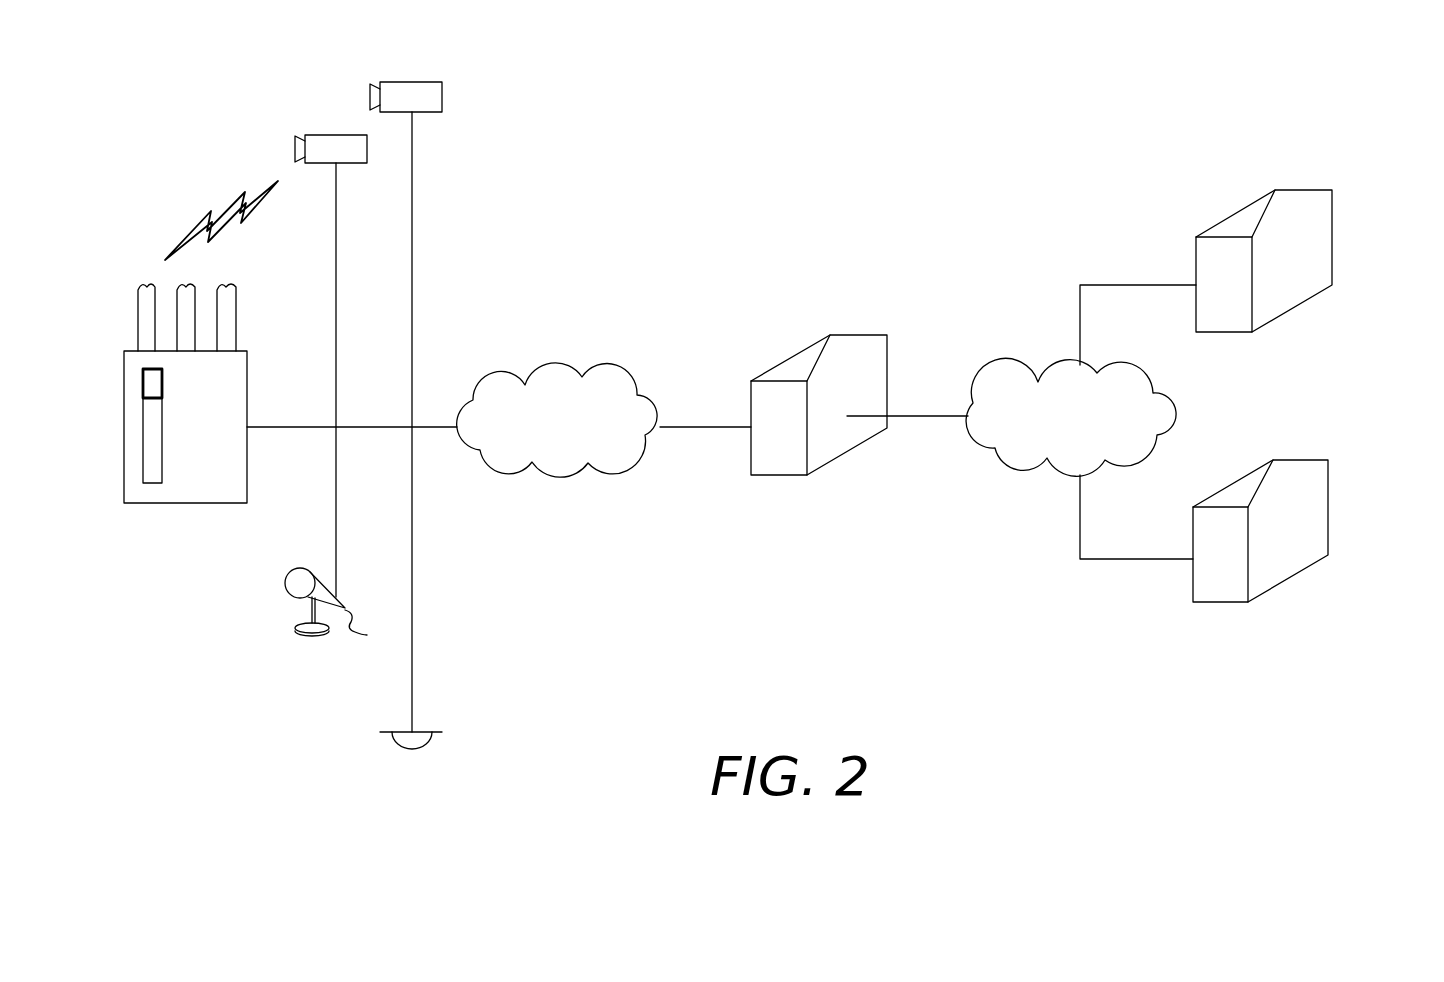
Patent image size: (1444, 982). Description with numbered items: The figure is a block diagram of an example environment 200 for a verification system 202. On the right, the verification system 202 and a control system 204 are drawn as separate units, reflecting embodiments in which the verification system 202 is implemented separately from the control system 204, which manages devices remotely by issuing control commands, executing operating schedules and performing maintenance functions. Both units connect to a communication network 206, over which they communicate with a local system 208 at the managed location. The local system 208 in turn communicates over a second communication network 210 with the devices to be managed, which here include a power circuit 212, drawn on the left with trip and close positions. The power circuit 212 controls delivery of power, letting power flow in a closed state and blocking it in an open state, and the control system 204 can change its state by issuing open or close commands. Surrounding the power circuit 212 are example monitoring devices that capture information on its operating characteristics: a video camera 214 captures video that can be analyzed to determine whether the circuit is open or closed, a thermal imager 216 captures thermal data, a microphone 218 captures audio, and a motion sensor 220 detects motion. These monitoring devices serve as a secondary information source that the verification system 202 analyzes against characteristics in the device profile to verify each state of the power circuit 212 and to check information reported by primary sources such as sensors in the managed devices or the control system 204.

The environment 200 is at (874, 140).
The verification system 202 is at (1305, 190).
The control system 204 is at (1298, 460).
The communication network 206 is at (1023, 470).
The local system 208 is at (862, 333).
The communication network 210 is at (568, 367).
The power circuit 212 is at (205, 504).
The video camera 214 is at (313, 134).
The thermal imager 216 is at (432, 82).
The microphone 218 is at (293, 598).
The motion sensor 220 is at (395, 736).